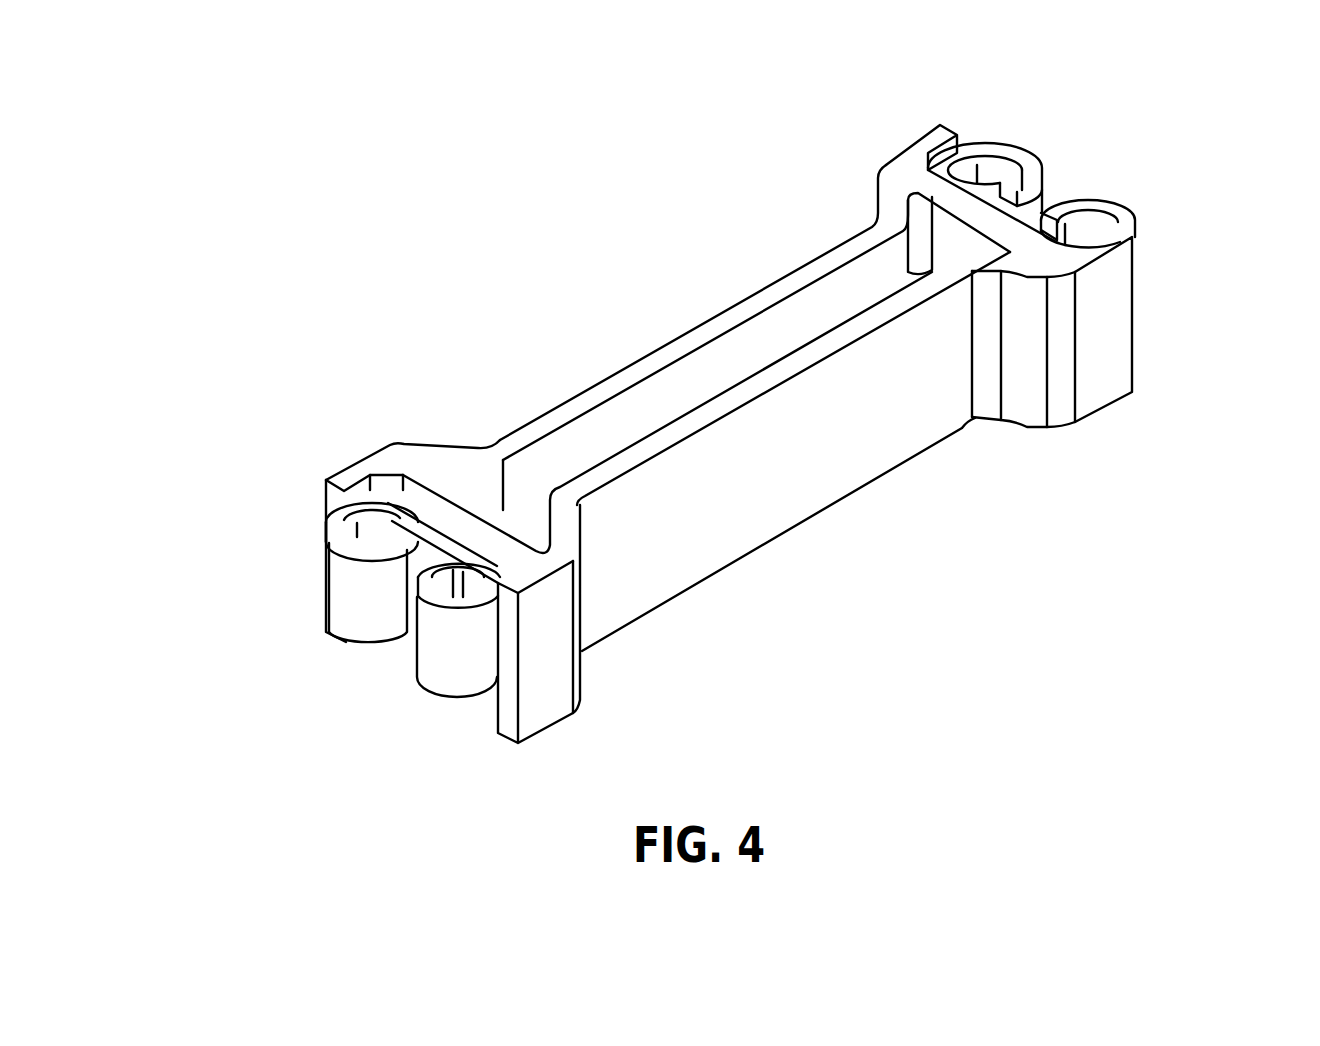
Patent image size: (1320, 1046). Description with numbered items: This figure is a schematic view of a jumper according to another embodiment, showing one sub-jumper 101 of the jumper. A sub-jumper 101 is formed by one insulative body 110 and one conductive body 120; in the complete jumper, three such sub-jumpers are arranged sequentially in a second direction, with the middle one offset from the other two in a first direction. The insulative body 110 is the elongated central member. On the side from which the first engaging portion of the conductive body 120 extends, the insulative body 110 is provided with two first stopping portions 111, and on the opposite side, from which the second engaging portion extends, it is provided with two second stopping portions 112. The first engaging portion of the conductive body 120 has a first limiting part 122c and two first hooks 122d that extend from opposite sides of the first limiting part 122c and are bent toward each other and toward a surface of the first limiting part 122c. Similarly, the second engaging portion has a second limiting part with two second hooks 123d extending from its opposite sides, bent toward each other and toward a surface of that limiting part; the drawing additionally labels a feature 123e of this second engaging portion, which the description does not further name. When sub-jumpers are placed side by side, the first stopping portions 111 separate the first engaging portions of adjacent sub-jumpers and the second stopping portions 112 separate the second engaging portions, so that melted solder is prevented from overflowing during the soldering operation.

The sub-jumper 101 is at (1185, 737).
The insulative body 110 is at (806, 490).
The first stopping portion 111 is at (347, 470).
The second stopping portion 112 is at (907, 153).
The conductive body 120 is at (327, 523).
The first limiting part 122c is at (428, 513).
The first hook 122d is at (347, 602).
The second hook 123d is at (1022, 158).
The connecting rib 123e is at (1042, 199).